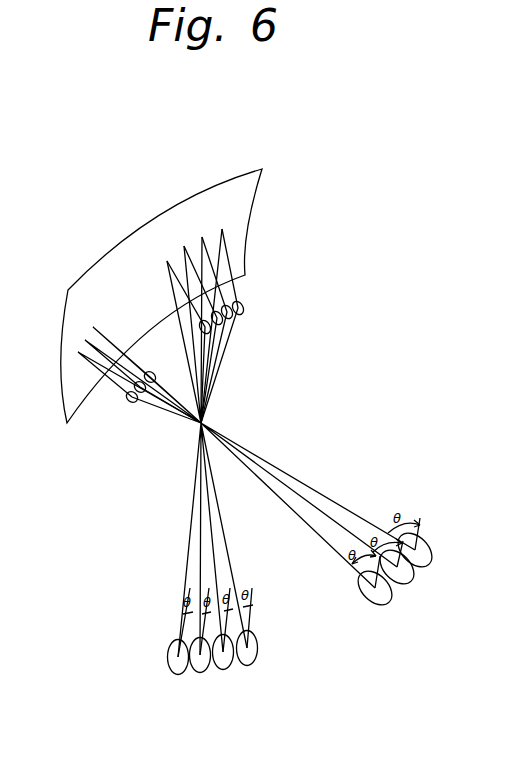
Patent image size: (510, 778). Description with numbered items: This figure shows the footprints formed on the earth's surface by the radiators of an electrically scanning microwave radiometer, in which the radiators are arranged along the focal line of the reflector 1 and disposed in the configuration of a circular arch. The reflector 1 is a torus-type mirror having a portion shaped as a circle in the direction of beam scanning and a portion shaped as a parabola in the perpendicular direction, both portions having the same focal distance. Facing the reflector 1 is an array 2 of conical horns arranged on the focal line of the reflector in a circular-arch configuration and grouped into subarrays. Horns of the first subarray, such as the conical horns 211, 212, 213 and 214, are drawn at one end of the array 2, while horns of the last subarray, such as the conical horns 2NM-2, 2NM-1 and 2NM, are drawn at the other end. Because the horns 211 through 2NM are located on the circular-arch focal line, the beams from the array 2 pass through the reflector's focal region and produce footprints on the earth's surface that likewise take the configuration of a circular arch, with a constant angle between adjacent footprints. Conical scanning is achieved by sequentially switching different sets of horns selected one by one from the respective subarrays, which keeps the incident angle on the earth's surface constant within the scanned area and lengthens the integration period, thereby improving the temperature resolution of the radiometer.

The reflector 1 is at (60, 359).
The array 2 is at (270, 282).
The conical horn 211 is at (243, 306).
The conical horn 212 is at (232, 320).
The conical horn 213 is at (216, 328).
The conical horn 214 is at (207, 336).
The conical horn 2NM-2 is at (160, 372).
The conical horn 2NM-1 is at (150, 400).
The conical horn 2NM is at (128, 408).